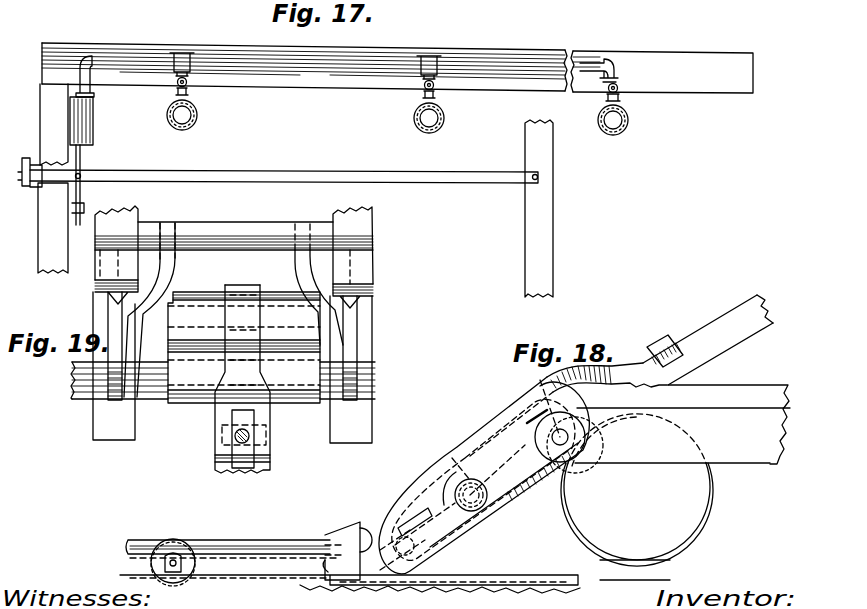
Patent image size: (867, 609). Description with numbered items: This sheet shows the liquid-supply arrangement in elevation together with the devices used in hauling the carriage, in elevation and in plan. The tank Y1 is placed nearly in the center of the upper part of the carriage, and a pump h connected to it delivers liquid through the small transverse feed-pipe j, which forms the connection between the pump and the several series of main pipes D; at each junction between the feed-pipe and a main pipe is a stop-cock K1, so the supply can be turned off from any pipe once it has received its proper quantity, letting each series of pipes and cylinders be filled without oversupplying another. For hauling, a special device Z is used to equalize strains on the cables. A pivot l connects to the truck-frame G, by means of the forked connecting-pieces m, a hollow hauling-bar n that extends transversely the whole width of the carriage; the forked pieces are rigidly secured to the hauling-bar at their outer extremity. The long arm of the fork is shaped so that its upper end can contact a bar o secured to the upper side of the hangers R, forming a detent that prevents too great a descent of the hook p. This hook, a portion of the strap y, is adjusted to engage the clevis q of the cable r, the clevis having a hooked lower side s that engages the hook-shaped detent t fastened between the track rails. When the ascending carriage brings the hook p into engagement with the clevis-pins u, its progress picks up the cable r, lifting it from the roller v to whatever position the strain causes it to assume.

In FIG. 17, the feed-pipe j is at (332, 70).
In FIG. 17, the tank Y1 is at (662, 72).
In FIG. 17, the stop-cock K1 is at (395, 77).
In FIG. 17, the pipes D is at (198, 116).
In FIG. 17, the pump h is at (93, 118).
In FIG. 19, the bar o is at (206, 242).
In FIG. 18, the bar o is at (665, 343).
In FIG. 19, the forked connecting-pieces m is at (130, 328).
In FIG. 18, the forked connecting-pieces m is at (632, 376).
In FIG. 19, the special device Z is at (244, 334).
In FIG. 18, the special device Z is at (484, 475).
In FIG. 19, the hollow hauling-bar n is at (372, 382).
In FIG. 18, the hollow hauling-bar n is at (465, 491).
In FIG. 19, the strap y is at (242, 379).
In FIG. 18, the strap y is at (518, 416).
In FIG. 18, the hangers R is at (708, 340).
In FIG. 18, the truck-frame G is at (682, 424).
In FIG. 18, the pivot l is at (568, 437).
In FIG. 18, the clevis-pins u is at (402, 550).
In FIG. 18, the hook p is at (411, 530).
In FIG. 18, the clevis q is at (362, 522).
In FIG. 18, the hooked lower side s is at (337, 561).
In FIG. 18, the cable r is at (190, 542).
In FIG. 18, the roller v is at (152, 567).
In FIG. 18, the hook-shaped detent t is at (350, 591).